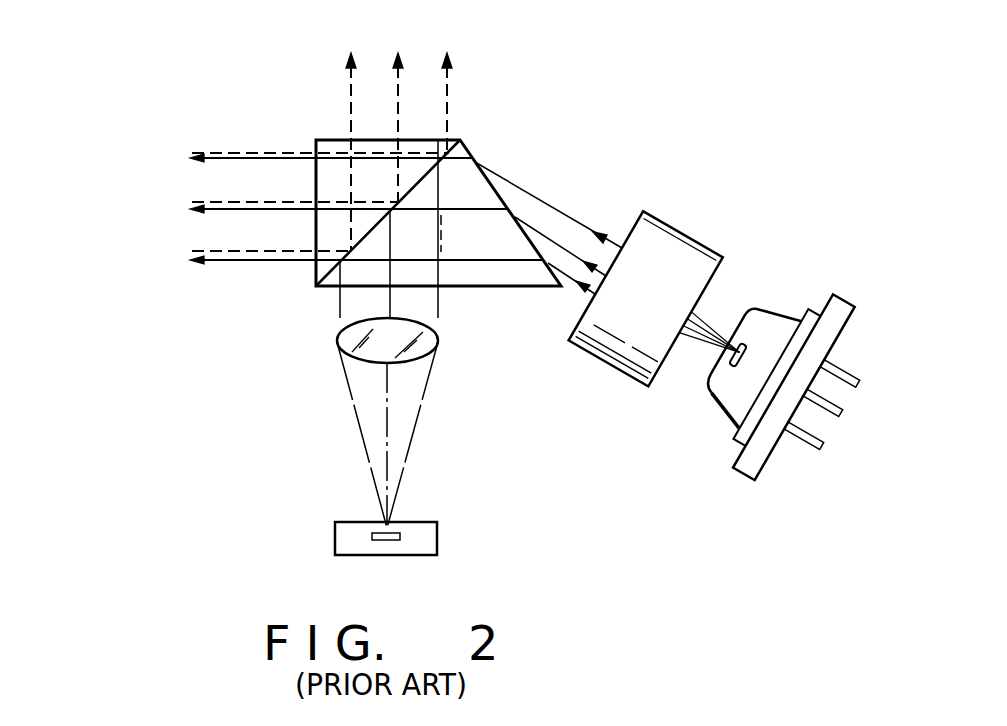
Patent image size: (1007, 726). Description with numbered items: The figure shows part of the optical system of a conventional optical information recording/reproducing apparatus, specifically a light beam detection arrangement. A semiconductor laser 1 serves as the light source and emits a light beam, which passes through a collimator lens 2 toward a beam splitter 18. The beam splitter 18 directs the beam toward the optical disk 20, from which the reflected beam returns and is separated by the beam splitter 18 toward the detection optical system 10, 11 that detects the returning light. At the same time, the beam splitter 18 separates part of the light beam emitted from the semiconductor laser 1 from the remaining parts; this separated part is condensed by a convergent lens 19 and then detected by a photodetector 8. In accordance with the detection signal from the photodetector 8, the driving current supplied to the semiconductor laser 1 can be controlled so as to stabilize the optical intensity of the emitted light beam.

The semiconductor laser 1 is at (840, 295).
The collimator lens 2 is at (687, 237).
The photodetector 8 is at (437, 542).
The detection optical system 10 is at (437, 131).
The detection optical system 11 is at (447, 103).
The beam splitter 18 is at (327, 137).
The convergent lens 19 is at (438, 342).
The optical disk 20 is at (295, 208).